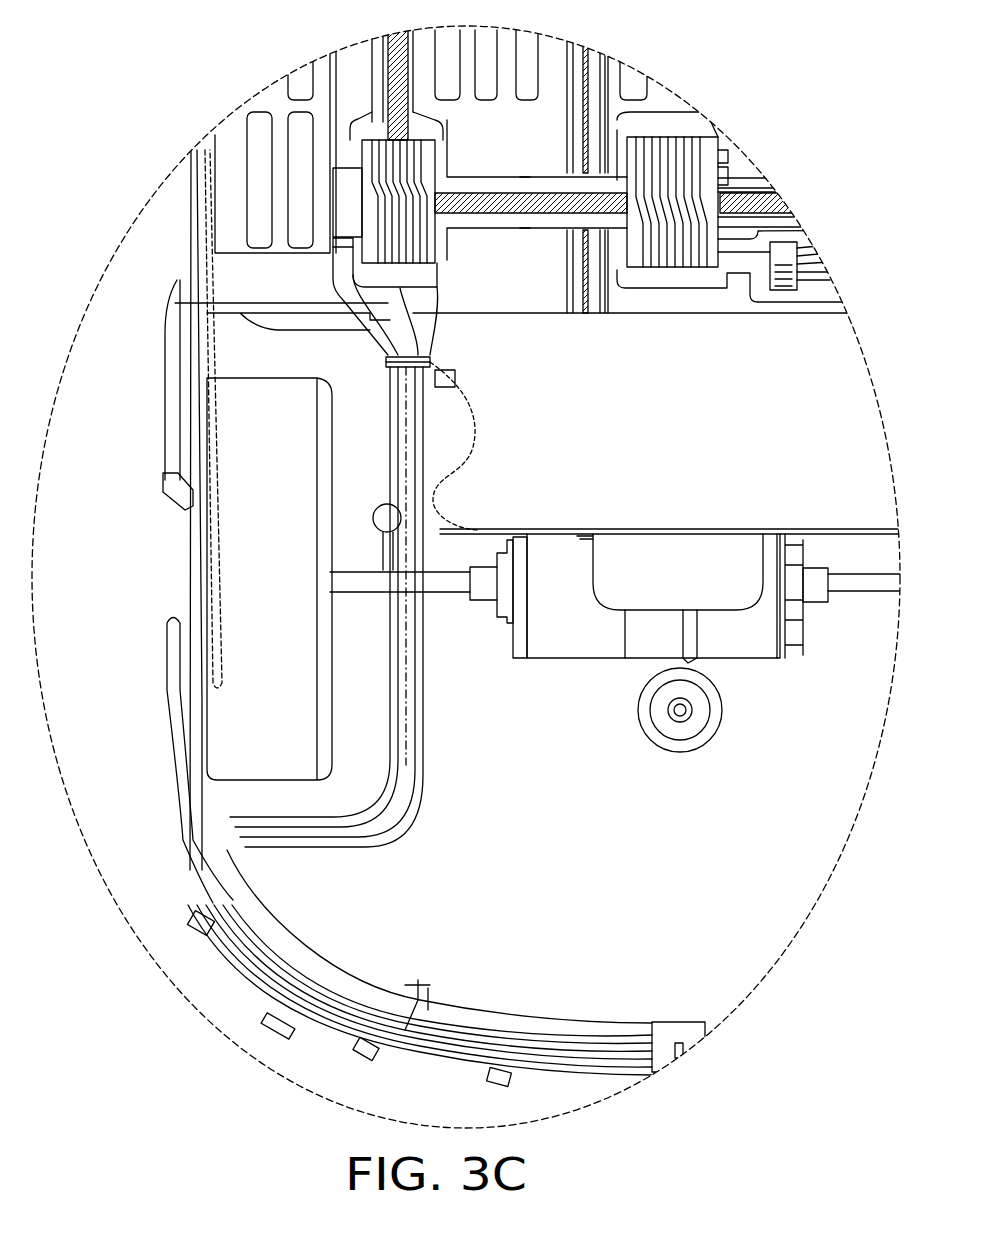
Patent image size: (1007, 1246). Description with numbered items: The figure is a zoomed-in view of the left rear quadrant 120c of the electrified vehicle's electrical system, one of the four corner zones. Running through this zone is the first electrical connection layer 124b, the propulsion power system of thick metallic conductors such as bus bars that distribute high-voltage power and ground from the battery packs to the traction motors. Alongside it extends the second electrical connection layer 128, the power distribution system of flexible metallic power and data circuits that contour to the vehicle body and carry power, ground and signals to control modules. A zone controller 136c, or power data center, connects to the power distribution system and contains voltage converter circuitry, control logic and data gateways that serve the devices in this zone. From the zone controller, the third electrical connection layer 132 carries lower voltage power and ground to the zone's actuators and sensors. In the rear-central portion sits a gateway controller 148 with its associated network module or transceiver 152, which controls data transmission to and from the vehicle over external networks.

The left rear quadrant 120c is at (876, 398).
The second electrical connection layer 128 is at (410, 100).
The zone controller 136c is at (430, 257).
The first electrical connection layer 124b is at (580, 303).
The gateway controller 148 is at (677, 260).
The network module or transceiver 152 is at (787, 295).
The third electrical connection layer 132 is at (408, 418).